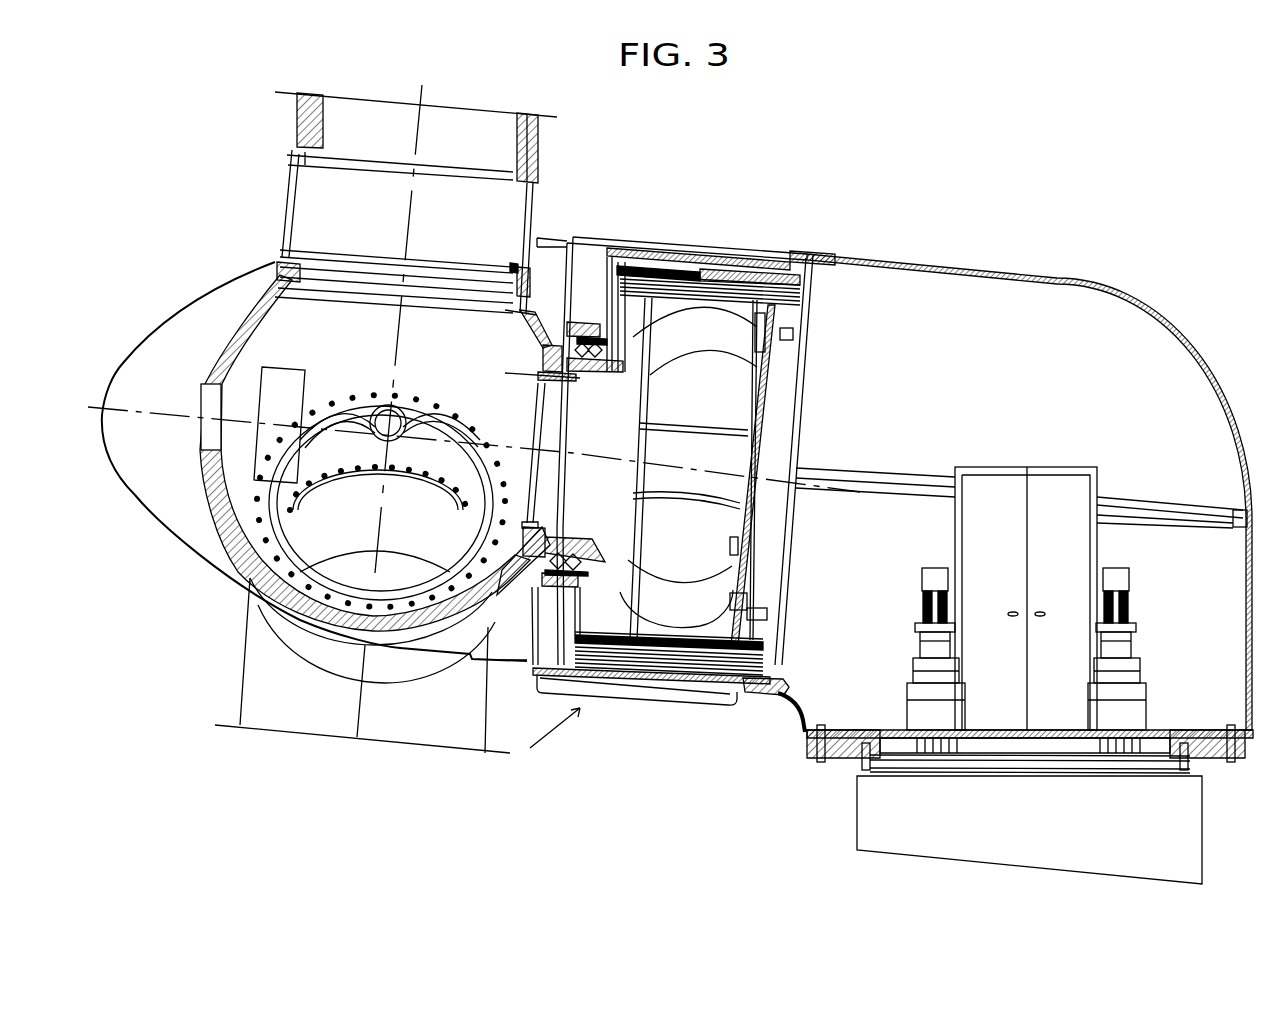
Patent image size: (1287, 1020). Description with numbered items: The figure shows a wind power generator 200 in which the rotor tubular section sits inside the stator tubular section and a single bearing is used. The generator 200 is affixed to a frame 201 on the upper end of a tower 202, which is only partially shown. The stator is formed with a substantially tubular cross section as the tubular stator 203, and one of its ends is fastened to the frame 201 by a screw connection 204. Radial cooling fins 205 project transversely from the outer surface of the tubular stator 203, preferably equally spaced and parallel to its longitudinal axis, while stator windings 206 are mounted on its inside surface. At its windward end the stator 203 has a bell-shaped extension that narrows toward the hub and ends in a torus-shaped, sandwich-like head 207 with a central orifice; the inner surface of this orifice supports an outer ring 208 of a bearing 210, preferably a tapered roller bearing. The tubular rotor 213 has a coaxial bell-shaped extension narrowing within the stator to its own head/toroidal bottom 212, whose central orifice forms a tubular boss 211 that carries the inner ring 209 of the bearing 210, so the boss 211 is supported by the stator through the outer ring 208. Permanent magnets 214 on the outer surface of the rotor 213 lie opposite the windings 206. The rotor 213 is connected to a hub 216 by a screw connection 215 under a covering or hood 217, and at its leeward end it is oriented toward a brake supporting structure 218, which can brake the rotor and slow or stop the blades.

The wind power generator 200 is at (520, 673).
The frame 201 is at (920, 262).
The tower 202 is at (857, 815).
The tubular stator 203 is at (647, 680).
The screw connection 204 is at (817, 255).
The radial cooling fins 205 is at (680, 237).
The stator windings 206 is at (793, 255).
The torus-shaped sandwich-like head 207 is at (565, 263).
The outer ring 208 is at (575, 675).
The inner ring 209 is at (607, 267).
The bearing 210 is at (627, 680).
The tubular boss 211 is at (637, 337).
The head/toroidal bottom 212 is at (640, 270).
The tubular rotor 213 is at (697, 680).
The permanent magnets 214 is at (745, 262).
The screw connection 215 is at (357, 735).
The hub 216 is at (233, 617).
The covering or hood 217 is at (190, 553).
The brake supporting structure 218 is at (772, 693).